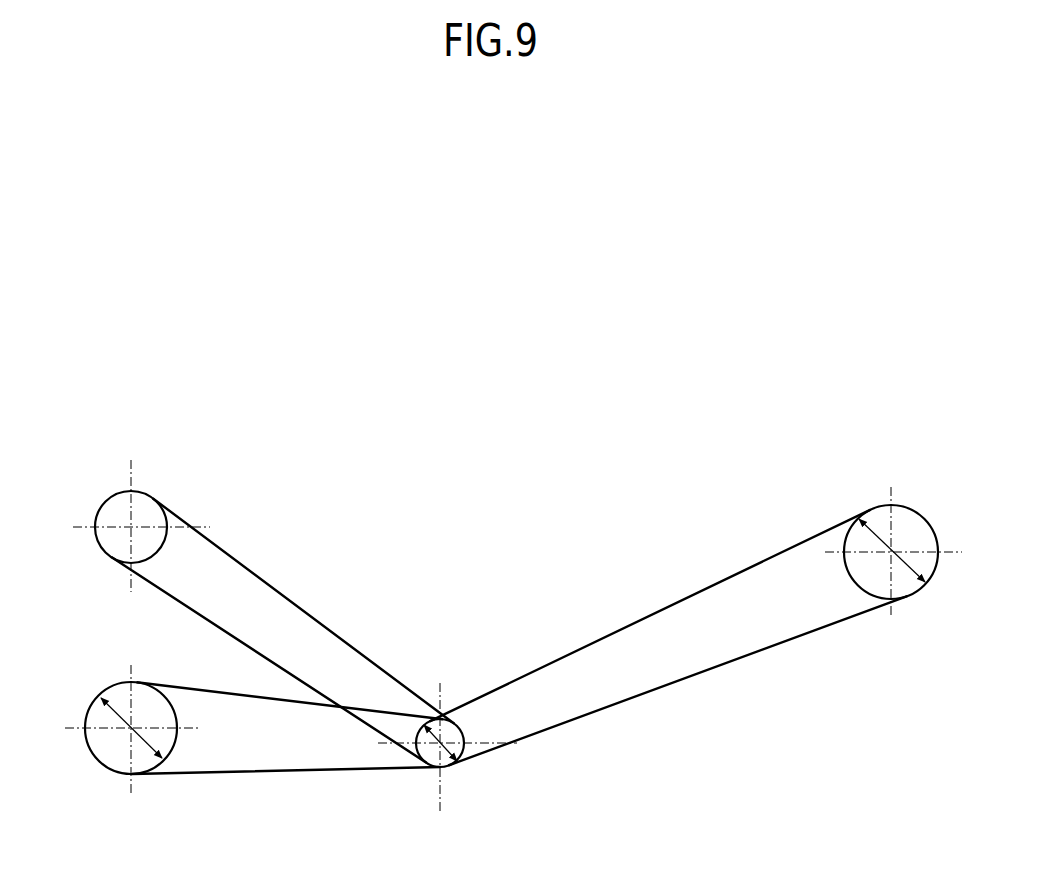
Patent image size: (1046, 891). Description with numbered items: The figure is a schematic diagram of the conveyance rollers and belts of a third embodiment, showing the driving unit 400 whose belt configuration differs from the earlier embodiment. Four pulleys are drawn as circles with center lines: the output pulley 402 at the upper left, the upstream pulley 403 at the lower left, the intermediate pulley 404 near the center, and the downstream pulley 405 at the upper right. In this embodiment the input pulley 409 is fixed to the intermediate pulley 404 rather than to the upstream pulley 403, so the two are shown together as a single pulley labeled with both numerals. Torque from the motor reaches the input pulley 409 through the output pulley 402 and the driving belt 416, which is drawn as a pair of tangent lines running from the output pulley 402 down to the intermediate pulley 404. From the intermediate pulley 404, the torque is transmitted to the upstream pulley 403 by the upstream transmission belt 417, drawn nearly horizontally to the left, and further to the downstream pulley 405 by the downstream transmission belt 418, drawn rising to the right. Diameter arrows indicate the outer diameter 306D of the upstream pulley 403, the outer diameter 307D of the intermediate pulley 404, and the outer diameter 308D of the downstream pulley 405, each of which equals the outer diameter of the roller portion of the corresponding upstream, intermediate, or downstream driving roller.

The driving unit 400 is at (443, 449).
The output pulley 402 is at (138, 510).
The upstream pulley 403 is at (97, 745).
The intermediate pulley 404 is at (428, 753).
The input pulley 409 is at (428, 752).
The downstream pulley 405 is at (880, 520).
The outer diameter of the upstream pulley 306D is at (147, 763).
The outer diameter of the intermediate pulley 307D is at (460, 727).
The outer diameter of the downstream pulley 308D is at (872, 535).
The driving belt 416 is at (298, 607).
The upstream transmission belt 417 is at (303, 772).
The downstream transmission belt 418 is at (582, 645).